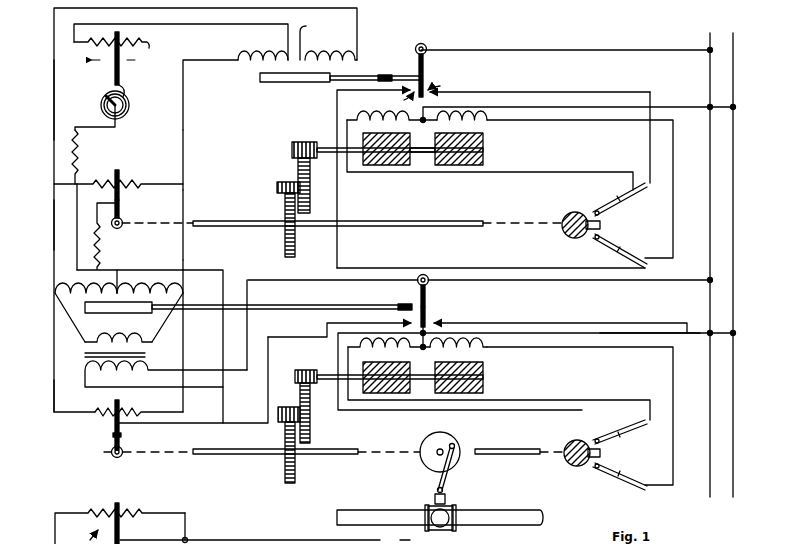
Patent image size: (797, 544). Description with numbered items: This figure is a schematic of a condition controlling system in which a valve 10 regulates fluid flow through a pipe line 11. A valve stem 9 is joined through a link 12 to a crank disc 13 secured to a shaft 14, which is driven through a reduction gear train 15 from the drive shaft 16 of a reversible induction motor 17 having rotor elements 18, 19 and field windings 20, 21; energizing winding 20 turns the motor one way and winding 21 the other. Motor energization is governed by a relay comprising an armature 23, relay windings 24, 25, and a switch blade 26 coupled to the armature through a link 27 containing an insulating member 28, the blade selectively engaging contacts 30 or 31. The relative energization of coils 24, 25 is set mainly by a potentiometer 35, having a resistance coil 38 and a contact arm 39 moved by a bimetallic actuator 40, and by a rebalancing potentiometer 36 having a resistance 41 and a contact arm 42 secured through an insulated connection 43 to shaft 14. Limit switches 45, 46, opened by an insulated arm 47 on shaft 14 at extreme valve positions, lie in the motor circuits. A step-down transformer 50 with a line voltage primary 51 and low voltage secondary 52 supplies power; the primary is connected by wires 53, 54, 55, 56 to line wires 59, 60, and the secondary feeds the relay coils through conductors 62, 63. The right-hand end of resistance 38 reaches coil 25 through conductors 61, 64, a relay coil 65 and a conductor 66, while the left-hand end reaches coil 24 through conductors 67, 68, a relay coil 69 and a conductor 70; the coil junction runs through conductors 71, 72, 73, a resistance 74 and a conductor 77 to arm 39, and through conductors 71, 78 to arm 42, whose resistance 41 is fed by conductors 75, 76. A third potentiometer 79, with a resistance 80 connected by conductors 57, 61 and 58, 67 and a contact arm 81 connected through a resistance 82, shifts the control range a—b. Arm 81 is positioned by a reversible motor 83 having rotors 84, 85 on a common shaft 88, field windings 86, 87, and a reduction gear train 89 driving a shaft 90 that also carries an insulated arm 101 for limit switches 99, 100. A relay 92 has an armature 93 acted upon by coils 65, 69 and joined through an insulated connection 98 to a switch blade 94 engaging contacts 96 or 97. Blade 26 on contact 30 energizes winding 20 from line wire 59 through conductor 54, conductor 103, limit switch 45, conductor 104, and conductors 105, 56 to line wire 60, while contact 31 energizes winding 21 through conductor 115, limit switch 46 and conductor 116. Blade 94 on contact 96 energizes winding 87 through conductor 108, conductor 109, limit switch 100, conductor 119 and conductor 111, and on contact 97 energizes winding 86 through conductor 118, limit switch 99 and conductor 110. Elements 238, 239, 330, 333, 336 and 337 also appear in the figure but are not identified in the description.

The valve stem 9 is at (432, 488).
The valve 10 is at (458, 500).
The pipe line 11 is at (514, 507).
The link 12 is at (434, 462).
The crank disc 13 is at (455, 446).
The shaft 14 is at (254, 450).
The reduction gear train 15 is at (314, 418).
The drive shaft 16 is at (324, 374).
The reversible induction motor 17 is at (497, 372).
The rotor element 18 is at (390, 394).
The rotor element 19 is at (458, 394).
The field winding 20 is at (388, 342).
The field winding 21 is at (474, 340).
The armature 23 is at (110, 314).
The relay winding 24 is at (56, 291).
The relay winding 25 is at (159, 282).
The switch blade 26 is at (430, 281).
The link 27 is at (292, 304).
The insulating member 28 is at (368, 304).
The contact 30 is at (420, 306).
The contact 31 is at (434, 324).
The potentiometer 35 is at (82, 62).
The potentiometer 36 is at (101, 440).
The resistance coil 38 is at (122, 49).
The contact arm 39 is at (122, 70).
The temperature responsive actuator 40 is at (130, 108).
The resistance 41 is at (96, 409).
The contact arm 42 is at (112, 420).
The insulated connection 43 is at (124, 436).
The limit switch 45 is at (633, 436).
The limit switch 46 is at (614, 482).
The insulated arm 47 is at (580, 443).
The step-down transformer 50 is at (74, 358).
The line voltage primary 51 is at (140, 372).
The low voltage secondary 52 is at (128, 338).
The wire 53 is at (270, 280).
The wire 54 is at (564, 280).
The wire 55 is at (228, 392).
The wire 56 is at (594, 332).
The conductor 57 is at (180, 180).
The conductor 58 is at (52, 178).
The line wire 59 is at (710, 248).
The line wire 60 is at (734, 356).
The conductor 61 is at (183, 194).
The conductor 62 is at (66, 313).
The conductor 63 is at (166, 325).
The conductor 64 is at (183, 88).
The relay coil 65 is at (242, 68).
The conductor 66 is at (226, 41).
The conductor 67 is at (54, 230).
The conductor 68 is at (54, 102).
The relay coil 69 is at (332, 57).
The conductor 70 is at (312, 36).
The conductor 71 is at (120, 270).
The conductor 72 is at (97, 254).
The conductor 73 is at (77, 190).
The resistance 74 is at (80, 157).
The conductor 75 is at (185, 340).
The conductor 76 is at (54, 402).
The conductor 77 is at (111, 131).
The conductor 78 is at (214, 274).
The potentiometer 79 is at (135, 178).
The resistance 80 is at (123, 190).
The contact arm 81 is at (121, 206).
The resistance 82 is at (108, 230).
The reversible motor 83 is at (421, 160).
The rotor 84 is at (388, 168).
The rotor 85 is at (458, 168).
The field winding 86 is at (376, 118).
The field winding 87 is at (487, 122).
The common shaft 88 is at (318, 148).
The reduction gear train 89 is at (286, 176).
The shaft 90 is at (448, 228).
The relay 92 is at (406, 46).
The armature 93 is at (294, 82).
The switch blade 94 is at (425, 62).
The contact 96 is at (403, 100).
The contact 97 is at (443, 82).
The insulated connection 98 is at (390, 76).
The limit switch 99 is at (636, 204).
The limit switch 100 is at (630, 244).
The insulated arm 101 is at (574, 212).
The conductor 103 is at (328, 326).
The conductor 104 is at (618, 402).
The conductor 105 is at (440, 334).
The conductor 108 is at (600, 50).
The conductor 109 is at (336, 100).
The conductor 110 is at (560, 172).
The conductor 111 is at (620, 106).
The conductor 115 is at (660, 322).
The conductor 116 is at (578, 349).
The conductor 118 is at (588, 80).
The conductor 119 is at (601, 121).
The resistor 238 is at (134, 510).
The switch arm 239 is at (120, 521).
The conductor 330 is at (188, 518).
The switch 333 is at (48, 543).
The conductor 336 is at (288, 530).
The conductor 337 is at (415, 538).